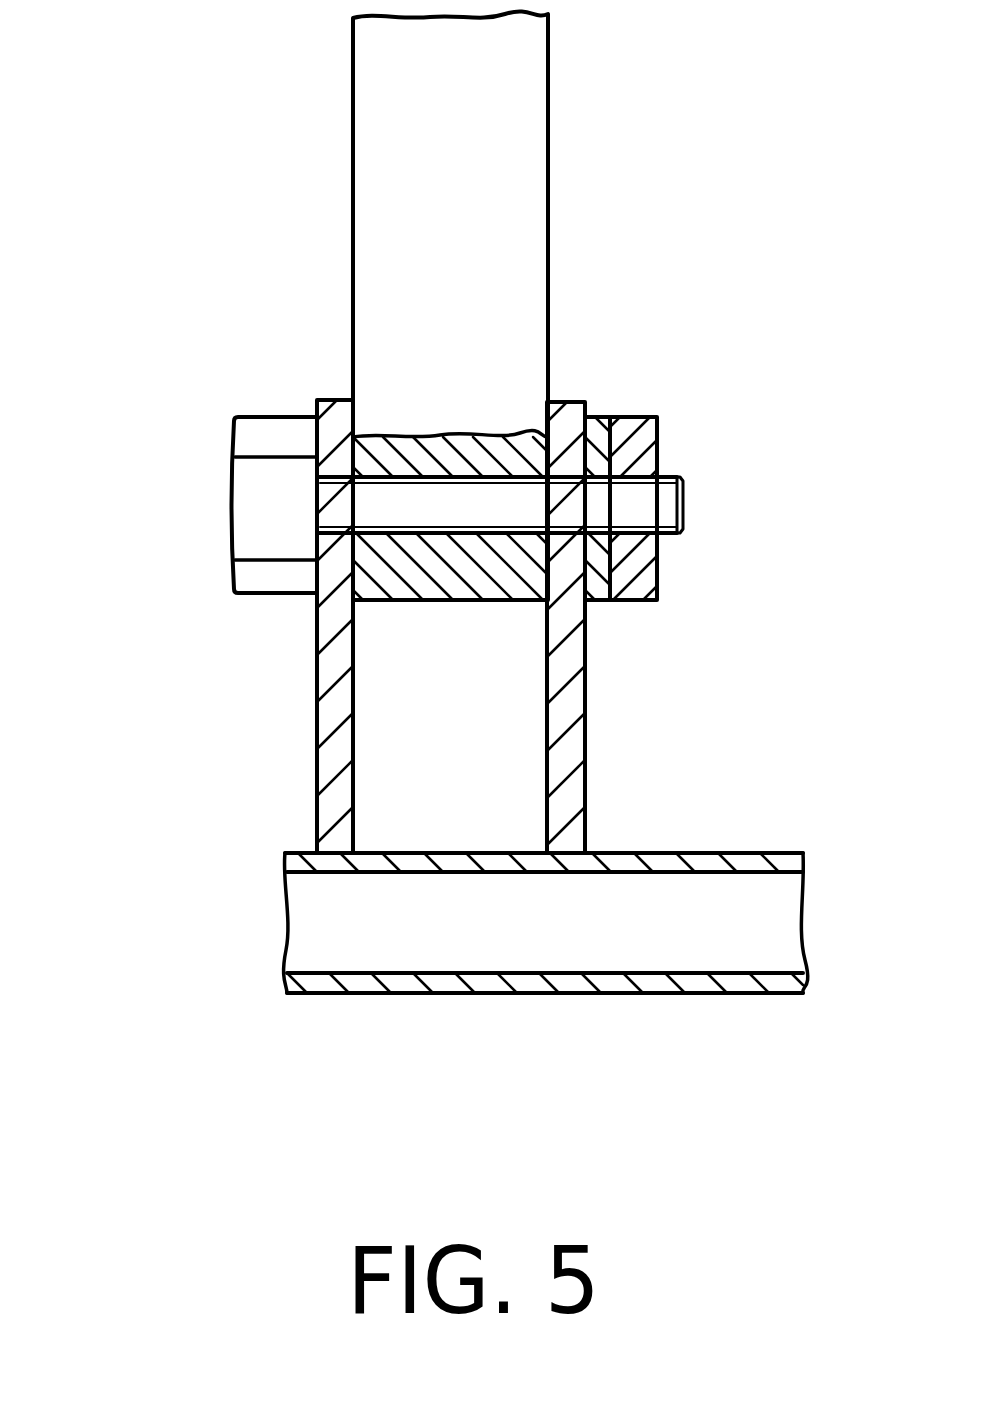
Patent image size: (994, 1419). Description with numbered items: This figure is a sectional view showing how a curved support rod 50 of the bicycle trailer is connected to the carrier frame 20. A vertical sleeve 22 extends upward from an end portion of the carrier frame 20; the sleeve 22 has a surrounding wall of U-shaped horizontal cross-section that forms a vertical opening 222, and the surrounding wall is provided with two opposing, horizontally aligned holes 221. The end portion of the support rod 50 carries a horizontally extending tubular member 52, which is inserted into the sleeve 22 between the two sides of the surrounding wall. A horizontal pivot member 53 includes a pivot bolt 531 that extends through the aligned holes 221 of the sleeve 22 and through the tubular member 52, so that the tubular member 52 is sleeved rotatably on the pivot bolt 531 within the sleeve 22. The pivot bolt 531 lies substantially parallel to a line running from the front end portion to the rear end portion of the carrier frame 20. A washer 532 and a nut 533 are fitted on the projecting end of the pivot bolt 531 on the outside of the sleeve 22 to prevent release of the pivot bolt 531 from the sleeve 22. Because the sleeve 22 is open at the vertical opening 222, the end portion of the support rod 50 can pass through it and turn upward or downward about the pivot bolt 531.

The carrier frame 20 is at (702, 838).
The vertical sleeve 22 is at (428, 626).
The holes 221 is at (337, 547).
The vertical opening 222 is at (520, 685).
The support rod 50 is at (565, 124).
The tubular member 52 is at (423, 473).
The horizontal pivot member 53 is at (466, 448).
The pivot bolt 531 is at (257, 489).
The washer 532 is at (600, 413).
The nut 533 is at (650, 413).